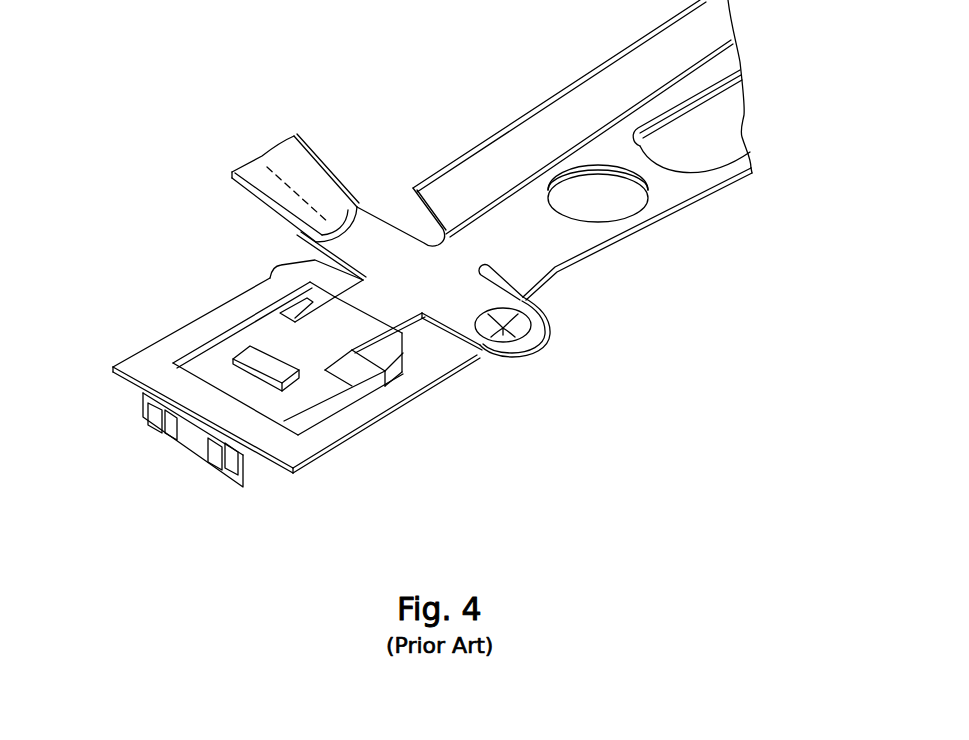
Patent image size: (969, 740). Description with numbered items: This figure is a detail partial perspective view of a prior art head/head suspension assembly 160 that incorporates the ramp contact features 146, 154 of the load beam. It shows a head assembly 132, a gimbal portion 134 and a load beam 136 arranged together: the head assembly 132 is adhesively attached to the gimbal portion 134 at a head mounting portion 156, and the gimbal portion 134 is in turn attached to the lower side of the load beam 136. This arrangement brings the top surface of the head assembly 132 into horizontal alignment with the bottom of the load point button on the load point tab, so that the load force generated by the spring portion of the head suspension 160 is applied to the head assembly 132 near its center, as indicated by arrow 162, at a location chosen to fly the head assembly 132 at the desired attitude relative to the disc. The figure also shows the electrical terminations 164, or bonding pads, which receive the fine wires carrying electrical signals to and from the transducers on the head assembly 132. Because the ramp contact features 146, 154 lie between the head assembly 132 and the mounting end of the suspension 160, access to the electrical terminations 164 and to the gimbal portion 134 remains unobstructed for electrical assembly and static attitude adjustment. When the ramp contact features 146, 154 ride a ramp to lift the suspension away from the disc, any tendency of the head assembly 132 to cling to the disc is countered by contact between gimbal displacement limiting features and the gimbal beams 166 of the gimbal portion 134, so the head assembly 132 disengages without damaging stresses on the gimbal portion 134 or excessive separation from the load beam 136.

The head assembly 132 is at (187, 443).
The gimbal portion 134 is at (452, 355).
The load beam 136 is at (513, 228).
The ramp contact feature 146 is at (265, 168).
The ramp contact feature 154 is at (523, 325).
The head mounting portion 156 is at (187, 392).
The head/head suspension assembly 160 is at (412, 56).
The arrow 162 is at (272, 368).
The electrical terminations 164 is at (168, 425).
The gimbal beams 166 is at (187, 338).